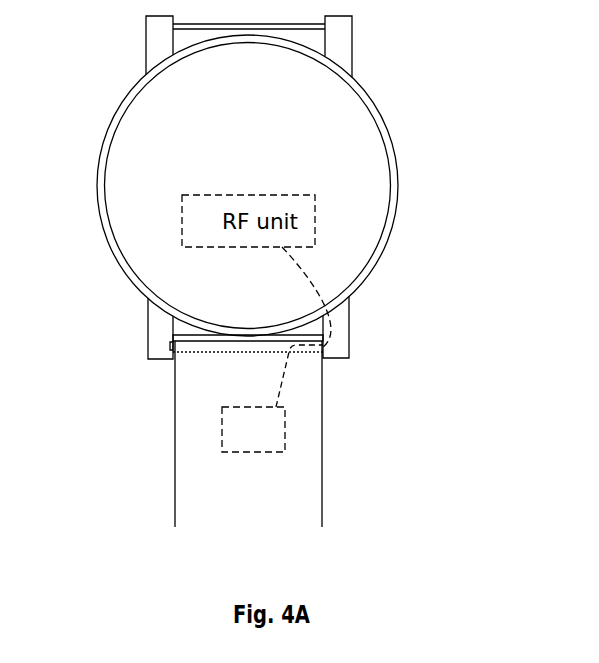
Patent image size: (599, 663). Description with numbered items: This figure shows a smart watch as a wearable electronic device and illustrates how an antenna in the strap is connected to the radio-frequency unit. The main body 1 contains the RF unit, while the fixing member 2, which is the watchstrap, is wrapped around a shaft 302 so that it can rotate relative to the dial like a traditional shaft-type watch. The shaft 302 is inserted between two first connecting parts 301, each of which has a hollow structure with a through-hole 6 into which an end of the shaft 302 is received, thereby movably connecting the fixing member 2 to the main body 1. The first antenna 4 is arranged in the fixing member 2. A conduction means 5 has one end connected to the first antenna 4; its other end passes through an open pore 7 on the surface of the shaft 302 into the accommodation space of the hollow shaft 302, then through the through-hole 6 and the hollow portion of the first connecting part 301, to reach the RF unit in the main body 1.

The main body 1 is at (398, 176).
The fixing member 2 is at (323, 470).
The first connecting part 301 is at (148, 335).
The shaft 302 is at (182, 348).
The first antenna 4 is at (286, 437).
The conduction means 5 is at (309, 270).
The through-hole 6 is at (327, 358).
The open pore 7 is at (293, 348).